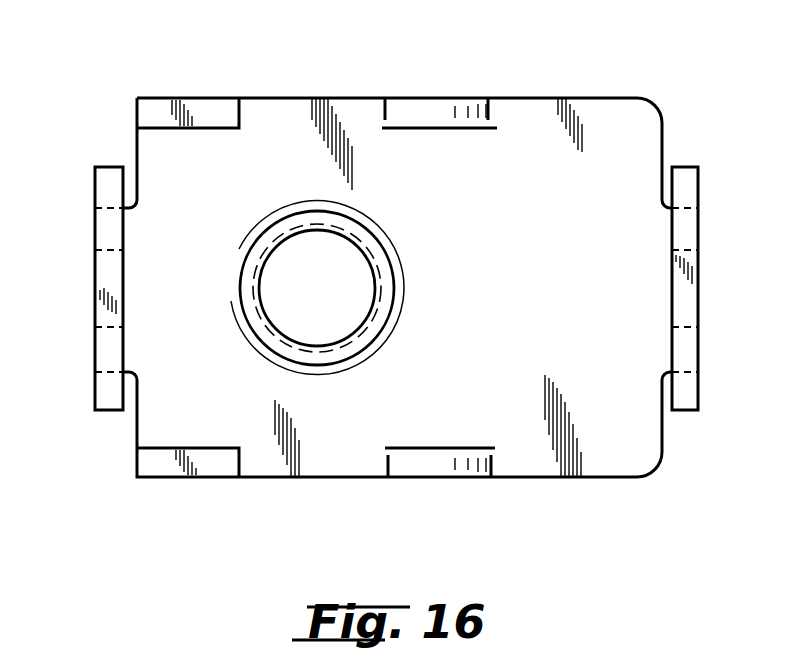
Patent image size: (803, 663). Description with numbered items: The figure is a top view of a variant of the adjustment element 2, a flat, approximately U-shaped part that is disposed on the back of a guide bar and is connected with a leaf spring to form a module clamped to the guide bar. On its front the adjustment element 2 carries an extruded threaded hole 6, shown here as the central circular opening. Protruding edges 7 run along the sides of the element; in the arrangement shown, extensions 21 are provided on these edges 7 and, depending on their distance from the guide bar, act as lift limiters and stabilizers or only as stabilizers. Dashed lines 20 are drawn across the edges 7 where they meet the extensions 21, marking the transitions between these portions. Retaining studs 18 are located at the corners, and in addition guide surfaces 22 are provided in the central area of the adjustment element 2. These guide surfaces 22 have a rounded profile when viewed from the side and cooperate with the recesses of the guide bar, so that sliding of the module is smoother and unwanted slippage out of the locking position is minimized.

The adjustment element 2 is at (545, 98).
The extruded threaded hole 6 is at (378, 254).
The protruding edge 7 is at (105, 344).
The retaining stud 18 is at (212, 104).
The fold line 20 is at (110, 252).
The extension 21 is at (107, 187).
The guide surface 22 is at (430, 107).